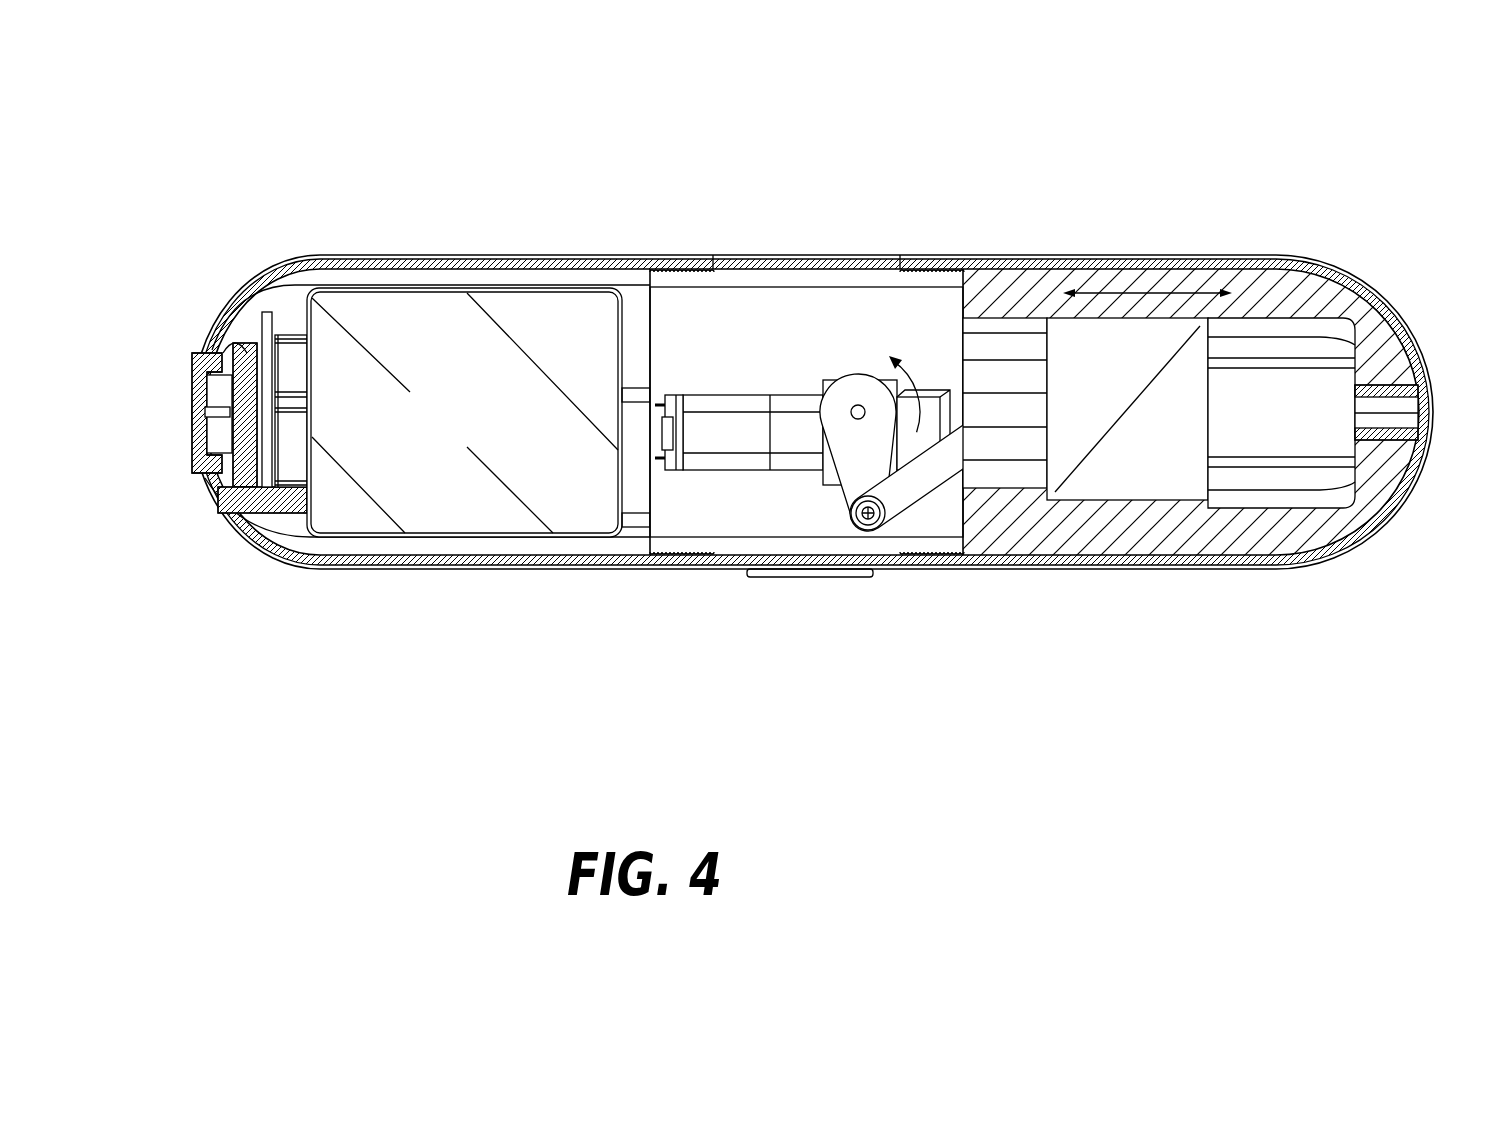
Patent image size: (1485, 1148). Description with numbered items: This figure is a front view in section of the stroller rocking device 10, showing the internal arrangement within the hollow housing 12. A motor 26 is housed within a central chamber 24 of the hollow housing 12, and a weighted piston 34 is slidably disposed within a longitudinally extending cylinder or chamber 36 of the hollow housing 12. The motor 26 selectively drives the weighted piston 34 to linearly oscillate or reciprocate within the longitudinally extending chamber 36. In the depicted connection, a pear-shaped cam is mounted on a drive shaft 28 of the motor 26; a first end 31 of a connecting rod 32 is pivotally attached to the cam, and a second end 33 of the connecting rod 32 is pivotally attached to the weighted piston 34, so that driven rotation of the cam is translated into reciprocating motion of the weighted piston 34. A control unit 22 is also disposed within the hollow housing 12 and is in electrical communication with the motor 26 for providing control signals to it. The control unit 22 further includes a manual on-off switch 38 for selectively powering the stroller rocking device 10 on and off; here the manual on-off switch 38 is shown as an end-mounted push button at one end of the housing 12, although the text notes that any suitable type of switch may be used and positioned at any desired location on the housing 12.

The stroller rocking device 10 is at (797, 370).
The hollow housing 12 is at (1268, 296).
The control unit 22 is at (428, 307).
The central chamber 24 is at (745, 318).
The motor 26 is at (762, 433).
The drive shaft 28 is at (859, 409).
The first end 31 is at (884, 519).
The connecting rod 32 is at (965, 453).
The second end 33 is at (1012, 396).
The weighted piston 34 is at (1132, 474).
The longitudinally extending chamber 36 is at (1285, 424).
The manual on-off switch 38 is at (200, 444).